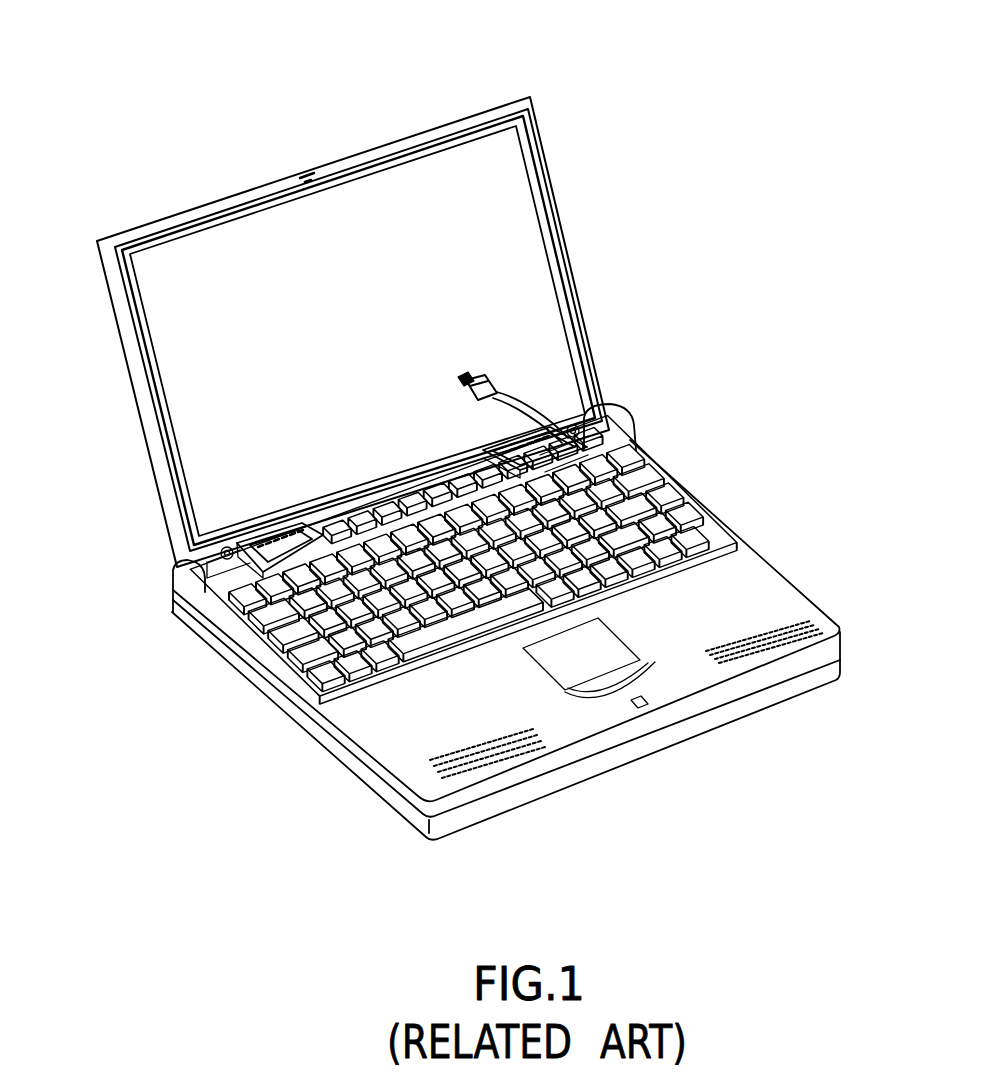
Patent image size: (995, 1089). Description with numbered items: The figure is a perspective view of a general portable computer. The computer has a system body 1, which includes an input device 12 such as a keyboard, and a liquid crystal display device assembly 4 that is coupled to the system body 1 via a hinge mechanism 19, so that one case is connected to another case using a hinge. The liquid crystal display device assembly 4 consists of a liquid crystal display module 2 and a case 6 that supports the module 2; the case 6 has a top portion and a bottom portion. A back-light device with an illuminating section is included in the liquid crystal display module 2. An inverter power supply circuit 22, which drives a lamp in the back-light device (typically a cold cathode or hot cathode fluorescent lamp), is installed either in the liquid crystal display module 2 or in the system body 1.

The system body 1 is at (230, 723).
The liquid crystal display module 2 is at (379, 283).
The liquid crystal display device assembly 4 is at (398, 77).
The case 6 is at (543, 160).
The input device 12 is at (665, 482).
The hinge mechanism 19 is at (630, 448).
The inverter power supply circuit 22 is at (355, 515).